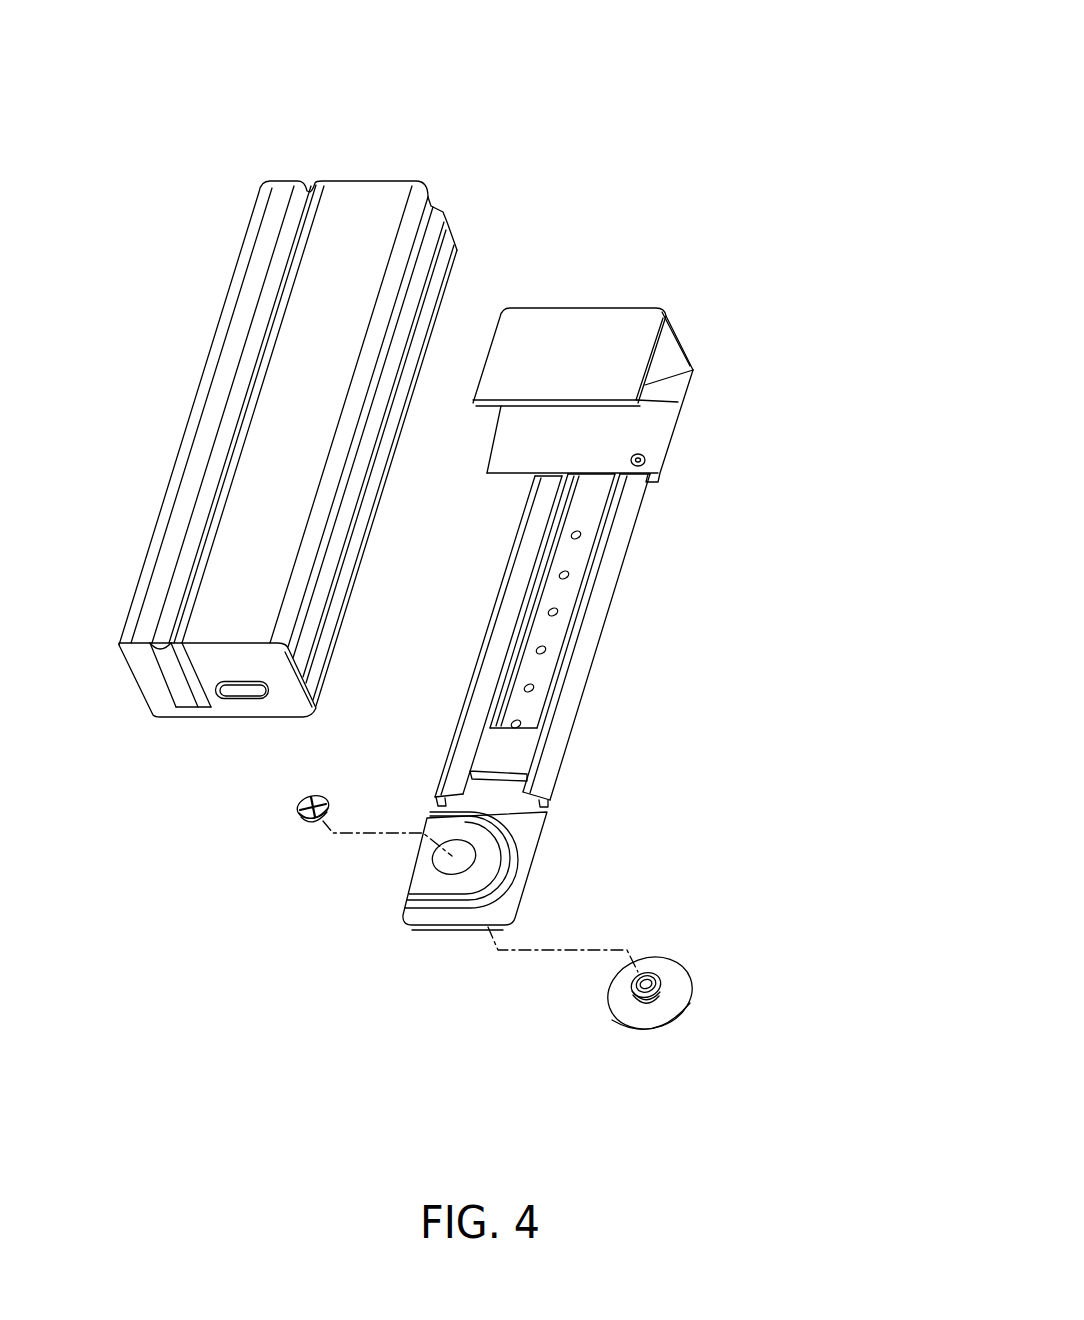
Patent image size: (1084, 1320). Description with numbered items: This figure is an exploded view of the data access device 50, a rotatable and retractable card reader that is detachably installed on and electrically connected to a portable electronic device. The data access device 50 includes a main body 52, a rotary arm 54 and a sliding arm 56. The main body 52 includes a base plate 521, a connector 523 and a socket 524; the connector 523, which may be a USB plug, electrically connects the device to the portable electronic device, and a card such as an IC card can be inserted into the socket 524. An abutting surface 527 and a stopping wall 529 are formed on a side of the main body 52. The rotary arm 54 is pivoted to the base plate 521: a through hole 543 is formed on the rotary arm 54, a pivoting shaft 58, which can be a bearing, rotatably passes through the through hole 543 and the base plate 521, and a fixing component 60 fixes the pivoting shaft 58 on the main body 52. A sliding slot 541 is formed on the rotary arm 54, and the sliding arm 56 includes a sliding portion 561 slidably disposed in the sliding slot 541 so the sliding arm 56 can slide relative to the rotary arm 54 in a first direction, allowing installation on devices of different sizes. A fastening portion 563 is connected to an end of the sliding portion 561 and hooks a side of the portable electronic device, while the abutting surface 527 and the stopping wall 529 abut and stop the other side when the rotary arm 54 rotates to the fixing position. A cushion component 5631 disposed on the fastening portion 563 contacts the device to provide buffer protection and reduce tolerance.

The data access device 50 is at (682, 93).
The main body 52 is at (222, 193).
The base plate 521 is at (202, 720).
The connector 523 is at (242, 690).
The socket 524 is at (172, 680).
The abutting surface 527 is at (440, 271).
The stopping wall 529 is at (440, 242).
The rotary arm 54 is at (657, 712).
The sliding slot 541 is at (545, 758).
The through hole 543 is at (462, 855).
The sliding arm 56 is at (853, 341).
The sliding portion 561 is at (555, 588).
The fastening portion 563 is at (665, 357).
The cushion component 5631 is at (658, 382).
The pivoting shaft 58 is at (625, 1012).
The fixing component 60 is at (305, 818).